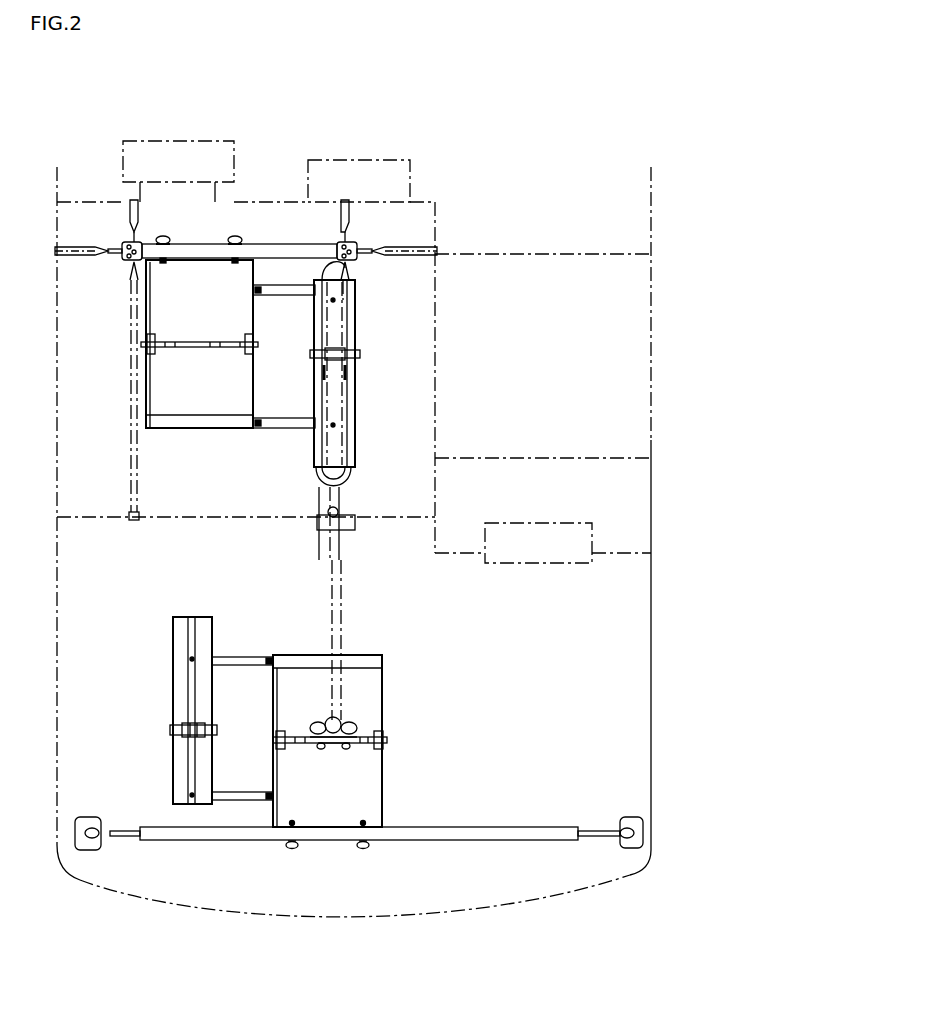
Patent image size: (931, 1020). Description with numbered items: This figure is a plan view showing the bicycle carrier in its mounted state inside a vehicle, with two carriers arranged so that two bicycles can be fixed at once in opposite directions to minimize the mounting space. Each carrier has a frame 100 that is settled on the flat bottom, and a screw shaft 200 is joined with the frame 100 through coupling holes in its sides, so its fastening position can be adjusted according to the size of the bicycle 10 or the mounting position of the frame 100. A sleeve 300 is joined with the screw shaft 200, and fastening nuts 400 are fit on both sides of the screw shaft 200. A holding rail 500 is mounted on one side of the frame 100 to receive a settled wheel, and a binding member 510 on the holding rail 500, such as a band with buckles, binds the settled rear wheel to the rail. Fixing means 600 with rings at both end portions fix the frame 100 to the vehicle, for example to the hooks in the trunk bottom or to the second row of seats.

The bicycle 10 is at (348, 583).
The frame 100 is at (383, 785).
The screw shaft 200 is at (388, 742).
The sleeve 300 is at (334, 745).
The fastening nuts 400 is at (360, 740).
The holding rail 500 is at (180, 690).
The binding member 510 is at (170, 730).
The fixing means 600 is at (278, 248).